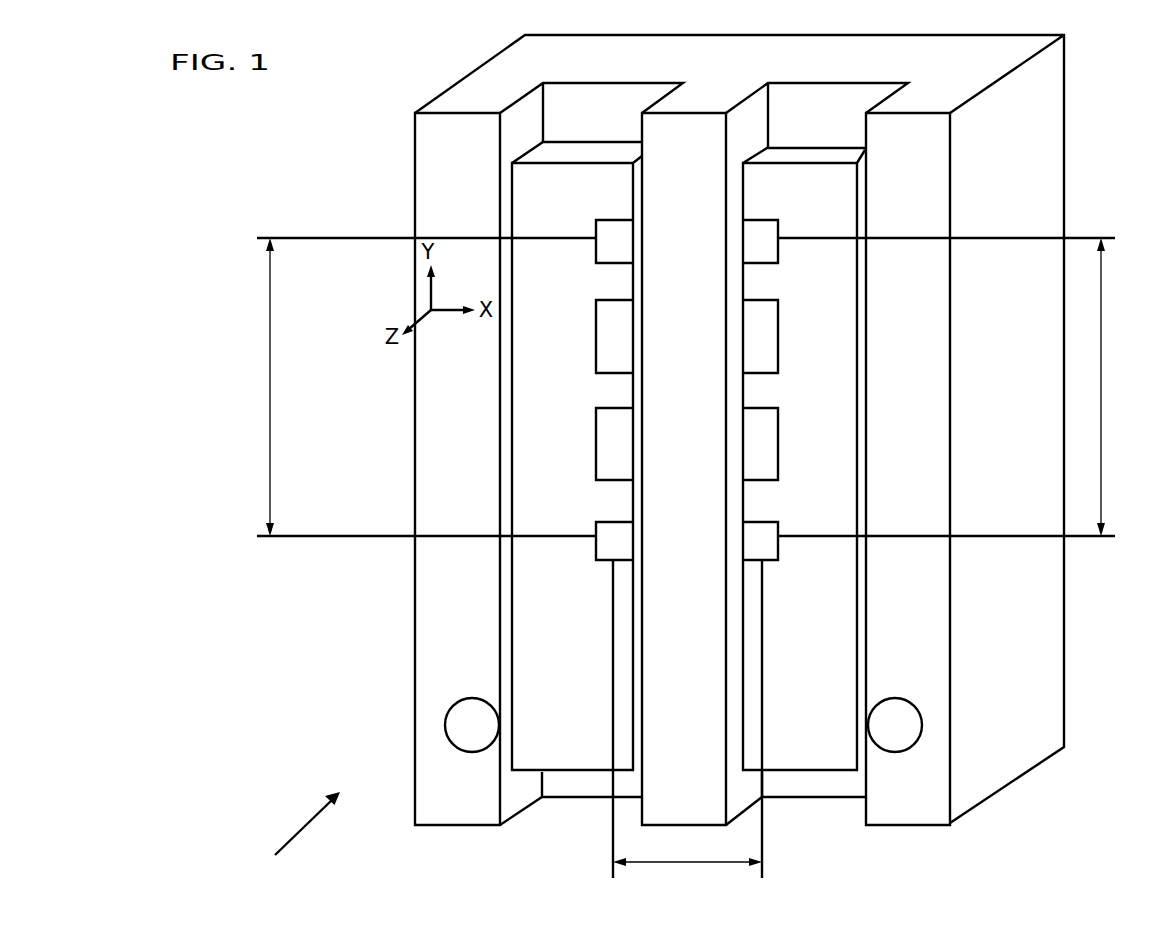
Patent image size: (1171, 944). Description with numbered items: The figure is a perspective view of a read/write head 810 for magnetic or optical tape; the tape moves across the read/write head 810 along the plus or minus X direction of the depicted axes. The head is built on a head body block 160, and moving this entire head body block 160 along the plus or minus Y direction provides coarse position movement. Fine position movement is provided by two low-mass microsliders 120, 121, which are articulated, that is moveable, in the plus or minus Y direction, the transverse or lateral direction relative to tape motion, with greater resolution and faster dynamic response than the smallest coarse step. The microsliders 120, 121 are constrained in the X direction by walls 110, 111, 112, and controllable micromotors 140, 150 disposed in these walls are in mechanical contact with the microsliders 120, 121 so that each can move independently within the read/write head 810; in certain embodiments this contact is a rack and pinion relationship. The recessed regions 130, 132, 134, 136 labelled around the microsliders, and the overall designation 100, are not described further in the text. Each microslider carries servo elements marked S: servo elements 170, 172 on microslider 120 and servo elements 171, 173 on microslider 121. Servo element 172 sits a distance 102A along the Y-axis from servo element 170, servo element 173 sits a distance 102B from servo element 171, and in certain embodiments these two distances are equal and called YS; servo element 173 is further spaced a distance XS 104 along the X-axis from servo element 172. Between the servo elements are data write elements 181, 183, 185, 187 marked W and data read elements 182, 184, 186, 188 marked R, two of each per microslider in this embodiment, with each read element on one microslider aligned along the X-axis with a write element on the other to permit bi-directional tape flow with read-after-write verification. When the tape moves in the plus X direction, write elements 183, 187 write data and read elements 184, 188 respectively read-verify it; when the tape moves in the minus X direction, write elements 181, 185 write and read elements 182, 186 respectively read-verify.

The magnetic memory device 100 is at (594, 112).
The wall 110 is at (441, 147).
The wall 111 is at (668, 147).
The wall 112 is at (894, 147).
The microslider 120 is at (551, 196).
The microslider 121 is at (783, 196).
The first recess 130 is at (533, 141).
The first recess floor 132 is at (568, 151).
The second recess 134 is at (752, 145).
The second recess floor 136 is at (782, 159).
The micromotor 140 is at (457, 736).
The micromotor 150 is at (880, 736).
The head body block 160 is at (1050, 105).
The servo element 170 is at (595, 247).
The servo element 171 is at (777, 247).
The servo element 172 is at (596, 535).
The servo element 173 is at (777, 535).
The data write element 181 is at (777, 310).
The data read element 182 is at (596, 318).
The data write element 183 is at (596, 358).
The data read element 184 is at (777, 359).
The data write element 185 is at (777, 428).
The data read element 186 is at (596, 426).
The data write element 187 is at (596, 470).
The data read element 188 is at (777, 470).
The distance 102A is at (403, 387).
The distance 102B is at (966, 387).
The distance XS 104 is at (687, 727).
The read/write head 810 is at (296, 838).